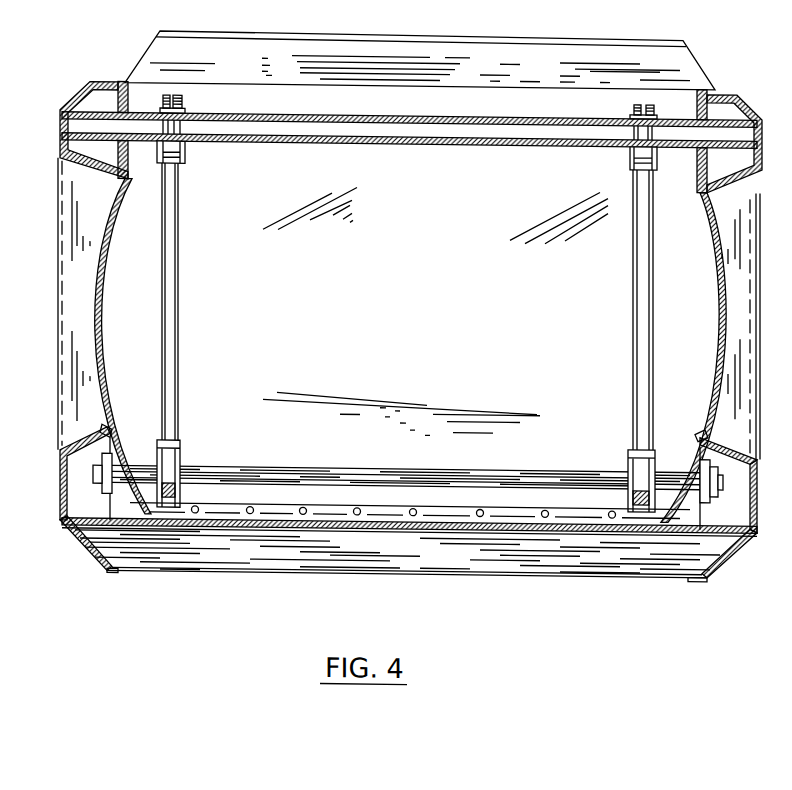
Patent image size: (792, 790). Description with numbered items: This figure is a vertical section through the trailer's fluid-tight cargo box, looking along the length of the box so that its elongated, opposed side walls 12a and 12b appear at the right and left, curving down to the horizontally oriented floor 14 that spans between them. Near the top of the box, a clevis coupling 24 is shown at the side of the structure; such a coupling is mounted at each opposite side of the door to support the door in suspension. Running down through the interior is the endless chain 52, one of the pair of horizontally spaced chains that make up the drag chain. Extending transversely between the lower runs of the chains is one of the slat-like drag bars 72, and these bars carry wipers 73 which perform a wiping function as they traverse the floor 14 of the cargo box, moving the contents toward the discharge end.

The clevis coupling 24 is at (0, 150).
The endless chain 52 is at (177, 263).
The side wall 12b is at (100, 316).
The side wall 12a is at (713, 336).
The drag bar 72 is at (255, 507).
The wiper 73 is at (393, 468).
The floor 14 is at (503, 509).